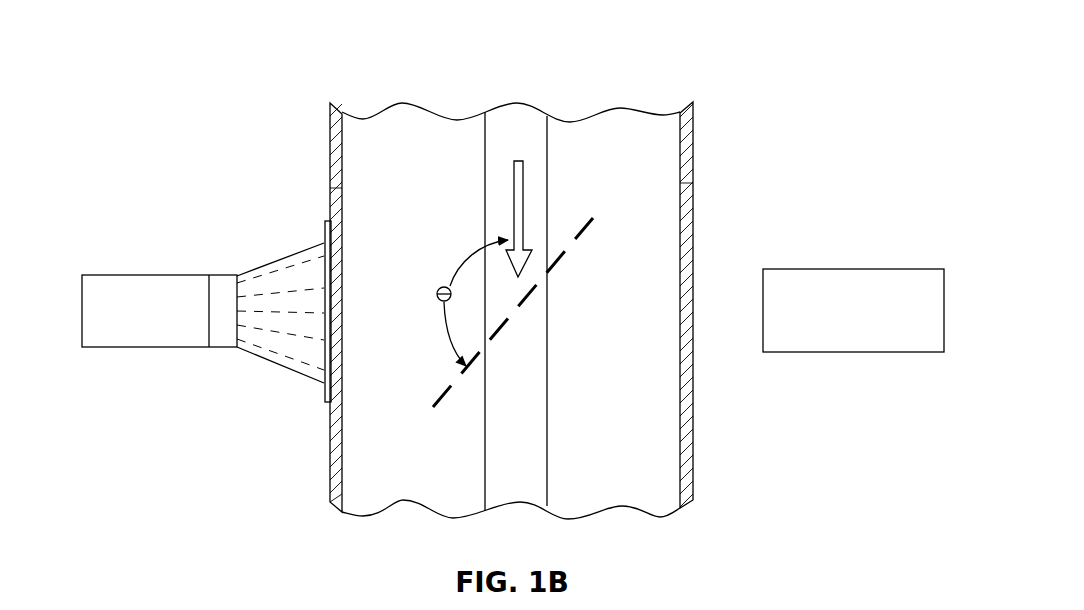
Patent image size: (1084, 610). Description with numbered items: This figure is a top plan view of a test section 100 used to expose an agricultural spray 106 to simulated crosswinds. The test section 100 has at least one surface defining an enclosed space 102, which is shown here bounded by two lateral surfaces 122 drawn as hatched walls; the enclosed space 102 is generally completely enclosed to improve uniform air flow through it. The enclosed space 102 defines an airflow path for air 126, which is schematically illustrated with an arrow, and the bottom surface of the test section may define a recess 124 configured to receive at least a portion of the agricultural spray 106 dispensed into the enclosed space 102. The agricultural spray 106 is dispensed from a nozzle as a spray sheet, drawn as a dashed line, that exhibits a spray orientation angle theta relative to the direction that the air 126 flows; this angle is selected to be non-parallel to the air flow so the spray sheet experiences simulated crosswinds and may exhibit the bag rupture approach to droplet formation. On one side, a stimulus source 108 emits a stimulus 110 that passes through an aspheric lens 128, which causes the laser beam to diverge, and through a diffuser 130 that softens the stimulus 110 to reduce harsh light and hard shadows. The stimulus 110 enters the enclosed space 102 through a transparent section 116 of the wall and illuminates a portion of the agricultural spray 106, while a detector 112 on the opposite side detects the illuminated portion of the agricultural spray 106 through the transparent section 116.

The test section 100 is at (727, 72).
The enclosed space 102 is at (620, 138).
The agricultural spray 106 is at (577, 240).
The stimulus source 108 is at (151, 275).
The stimulus 110 is at (283, 258).
The detector 112 is at (803, 269).
The transparent section 116 is at (342, 205).
The lateral surfaces 122 is at (330, 462).
The recess 124 is at (518, 137).
The air 126 is at (514, 176).
The aspheric lens 128 is at (224, 275).
The diffuser 130 is at (322, 389).